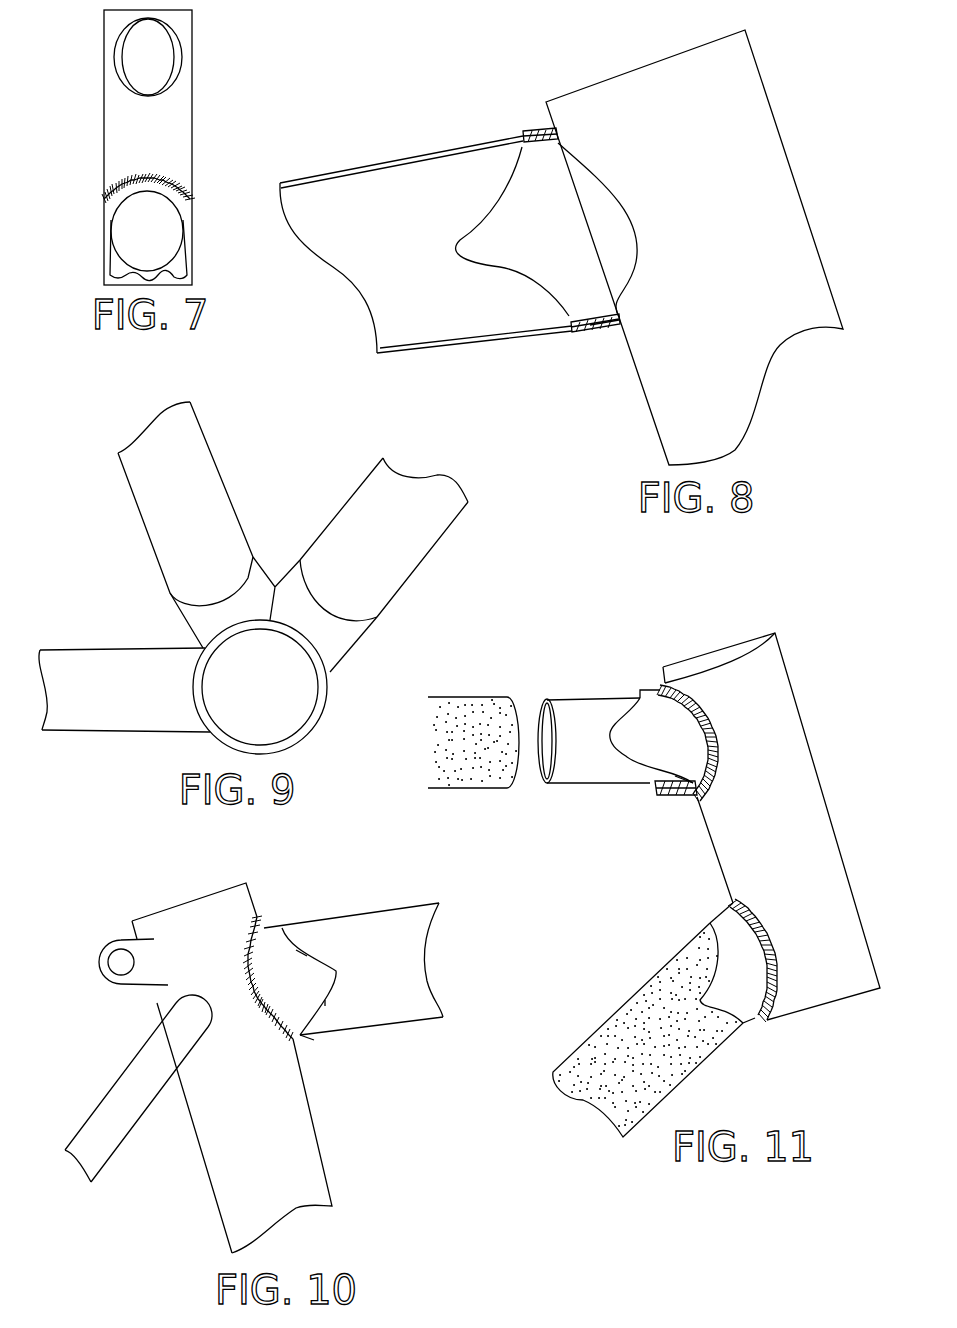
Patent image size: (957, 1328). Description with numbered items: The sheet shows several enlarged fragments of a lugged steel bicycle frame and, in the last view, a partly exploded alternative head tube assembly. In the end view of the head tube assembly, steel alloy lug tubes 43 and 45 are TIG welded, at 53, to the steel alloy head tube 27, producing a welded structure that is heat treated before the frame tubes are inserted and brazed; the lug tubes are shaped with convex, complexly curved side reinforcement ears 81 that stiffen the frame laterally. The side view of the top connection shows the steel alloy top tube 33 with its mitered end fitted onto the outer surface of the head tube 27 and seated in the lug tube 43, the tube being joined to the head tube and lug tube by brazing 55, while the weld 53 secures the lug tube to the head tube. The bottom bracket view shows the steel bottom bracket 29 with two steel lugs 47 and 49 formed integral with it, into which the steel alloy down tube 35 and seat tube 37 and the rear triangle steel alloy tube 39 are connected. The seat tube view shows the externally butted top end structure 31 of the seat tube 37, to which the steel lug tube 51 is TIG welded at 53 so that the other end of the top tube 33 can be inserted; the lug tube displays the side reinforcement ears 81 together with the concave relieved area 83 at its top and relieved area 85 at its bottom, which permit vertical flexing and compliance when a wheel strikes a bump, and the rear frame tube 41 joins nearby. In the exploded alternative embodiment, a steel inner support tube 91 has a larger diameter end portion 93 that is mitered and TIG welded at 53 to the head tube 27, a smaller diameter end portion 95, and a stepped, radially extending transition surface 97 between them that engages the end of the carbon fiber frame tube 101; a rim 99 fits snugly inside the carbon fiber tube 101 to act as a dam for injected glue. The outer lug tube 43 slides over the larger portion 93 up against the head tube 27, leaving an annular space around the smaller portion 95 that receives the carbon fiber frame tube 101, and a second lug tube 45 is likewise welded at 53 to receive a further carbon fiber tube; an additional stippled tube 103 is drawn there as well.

In FIG. 7, the head tube 27 is at (194, 116).
In FIG. 8, the head tube 27 is at (652, 418).
In FIG. 11, the head tube 27 is at (793, 678).
In FIG. 9, the bottom bracket 29 is at (322, 718).
In FIG. 10, the top end structure 31 is at (250, 889).
In FIG. 8, the top tube 33 is at (392, 168).
In FIG. 10, the top tube 33 is at (411, 905).
In FIG. 9, the down tube 35 is at (410, 572).
In FIG. 9, the seat tube 37 is at (217, 470).
In FIG. 10, the seat tube 37 is at (327, 1181).
In FIG. 9, the rear frame tube 39 is at (158, 733).
In FIG. 10, the rear frame tube 41 is at (102, 1099).
In FIG. 7, the lug tube 43 is at (150, 97).
In FIG. 8, the lug tube 43 is at (599, 333).
In FIG. 11, the lug tube 43 is at (673, 797).
In FIG. 7, the lug tube 45 is at (184, 214).
In FIG. 11, the lug tube 45 is at (717, 922).
In FIG. 9, the lug 47 is at (351, 648).
In FIG. 9, the lug 49 is at (186, 622).
In FIG. 10, the lug tube 51 is at (314, 1040).
In FIG. 7, the TIG weld 53 is at (152, 179).
In FIG. 8, the TIG weld 53 is at (552, 130).
In FIG. 10, the TIG weld 53 is at (248, 947).
In FIG. 11, the TIG weld 53 is at (703, 710).
In FIG. 8, the brazing 55 is at (548, 143).
In FIG. 7, the side reinforcement ears 81 is at (182, 60).
In FIG. 10, the side reinforcement ears 81 is at (337, 971).
In FIG. 11, the side reinforcement ears 81 is at (612, 733).
In FIG. 10, the relieved area 83 is at (307, 956).
In FIG. 11, the relieved area 83 is at (640, 689).
In FIG. 10, the relieved area 85 is at (325, 1006).
In FIG. 11, the inner support tube 91 is at (580, 699).
In FIG. 11, the larger diameter end portion 93 is at (688, 797).
In FIG. 11, the smaller diameter end portion 95 is at (653, 786).
In FIG. 11, the transition surface 97 is at (677, 778).
In FIG. 11, the rim 99 is at (545, 700).
In FIG. 11, the carbon fiber frame tube 101 is at (468, 695).
In FIG. 11, the plug insert 103 is at (632, 997).